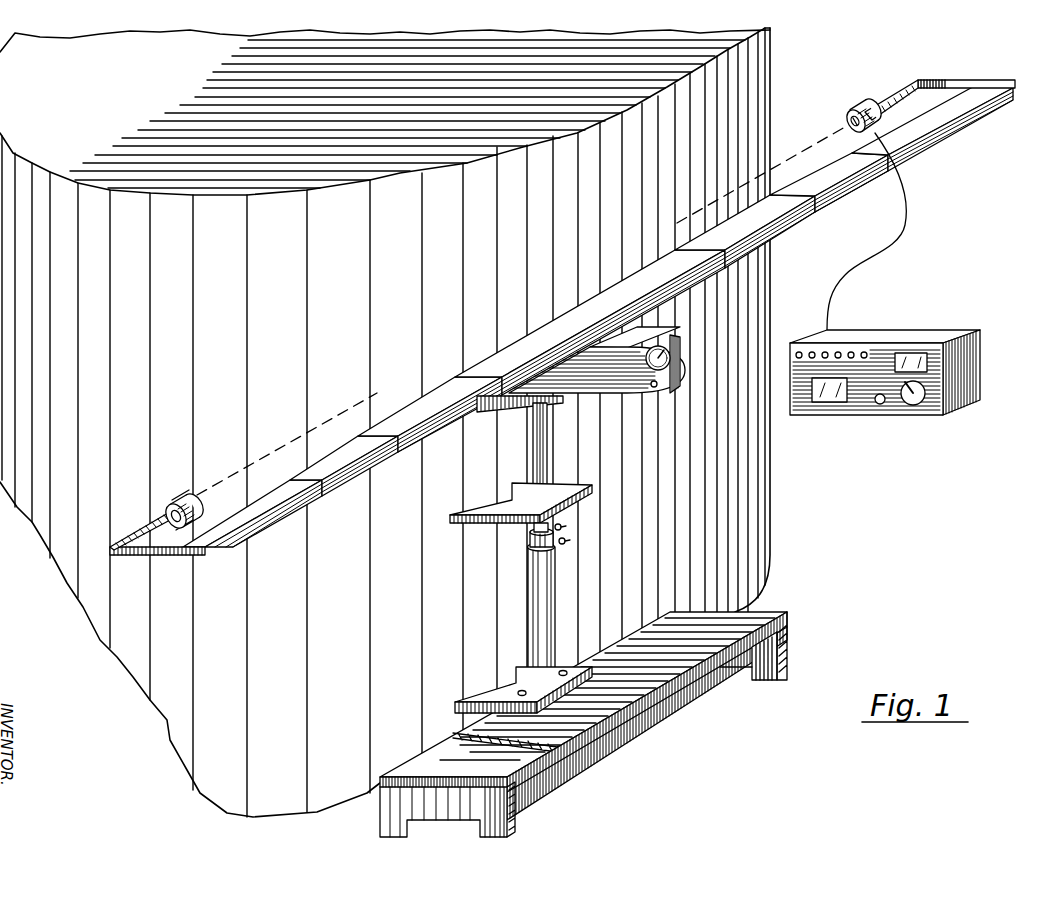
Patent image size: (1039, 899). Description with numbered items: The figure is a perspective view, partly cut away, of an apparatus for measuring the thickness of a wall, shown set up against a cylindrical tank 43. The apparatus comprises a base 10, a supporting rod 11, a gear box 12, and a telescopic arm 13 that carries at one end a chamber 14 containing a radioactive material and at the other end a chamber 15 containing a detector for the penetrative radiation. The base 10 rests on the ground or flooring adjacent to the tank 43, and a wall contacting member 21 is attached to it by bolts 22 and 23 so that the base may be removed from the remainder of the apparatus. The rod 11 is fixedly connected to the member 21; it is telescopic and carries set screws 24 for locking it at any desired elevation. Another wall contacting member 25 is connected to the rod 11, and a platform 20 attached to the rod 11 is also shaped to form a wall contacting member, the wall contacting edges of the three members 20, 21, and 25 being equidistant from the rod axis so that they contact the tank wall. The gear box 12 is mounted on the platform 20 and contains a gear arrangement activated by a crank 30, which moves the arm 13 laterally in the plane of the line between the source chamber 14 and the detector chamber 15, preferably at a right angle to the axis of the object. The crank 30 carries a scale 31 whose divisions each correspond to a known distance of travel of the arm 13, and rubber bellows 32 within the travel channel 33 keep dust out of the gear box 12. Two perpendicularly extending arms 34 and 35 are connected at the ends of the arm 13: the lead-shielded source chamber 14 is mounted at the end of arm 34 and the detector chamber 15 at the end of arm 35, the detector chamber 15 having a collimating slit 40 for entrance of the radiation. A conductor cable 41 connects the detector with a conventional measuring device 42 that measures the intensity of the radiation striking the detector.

The base 10 is at (742, 617).
The supporting rod 11 is at (549, 571).
The gear box 12 is at (615, 347).
The telescopic arm 13 is at (574, 311).
The chamber 14 is at (181, 500).
The detector chamber 15 is at (849, 94).
The platform 20 is at (544, 401).
The wall contacting member 21 is at (452, 709).
The bolt 22 is at (518, 692).
The bolt 23 is at (563, 670).
The set screws 24 is at (566, 527).
The wall contacting member 25 is at (470, 524).
The crank 30 is at (672, 352).
The scale 31 is at (655, 385).
The rubber bellows 32 is at (597, 370).
The travel channel 33 is at (652, 332).
The arm 34 is at (155, 553).
The arm 35 is at (945, 86).
The collimating slit 40 is at (850, 118).
The conductor cable 41 is at (884, 242).
The measuring device 42 is at (925, 407).
The tank 43 is at (771, 493).